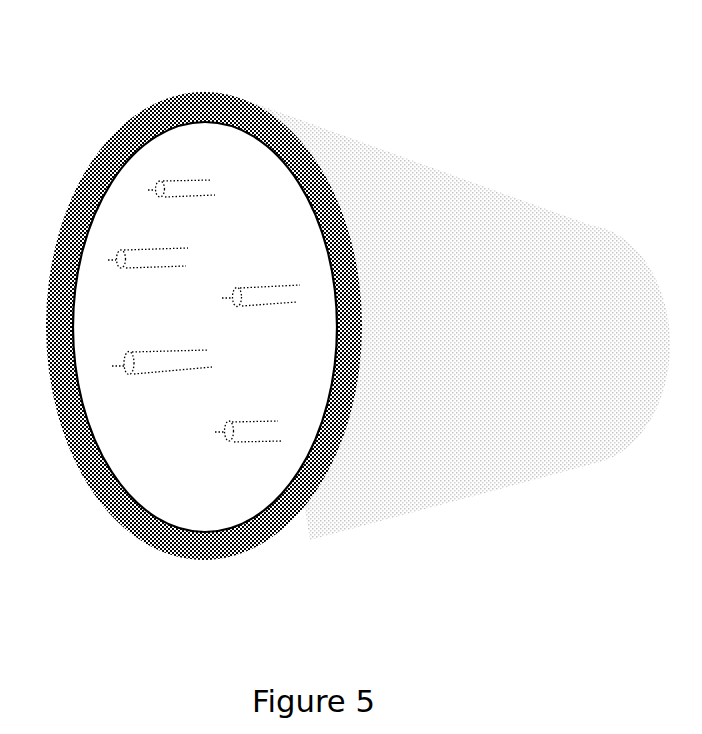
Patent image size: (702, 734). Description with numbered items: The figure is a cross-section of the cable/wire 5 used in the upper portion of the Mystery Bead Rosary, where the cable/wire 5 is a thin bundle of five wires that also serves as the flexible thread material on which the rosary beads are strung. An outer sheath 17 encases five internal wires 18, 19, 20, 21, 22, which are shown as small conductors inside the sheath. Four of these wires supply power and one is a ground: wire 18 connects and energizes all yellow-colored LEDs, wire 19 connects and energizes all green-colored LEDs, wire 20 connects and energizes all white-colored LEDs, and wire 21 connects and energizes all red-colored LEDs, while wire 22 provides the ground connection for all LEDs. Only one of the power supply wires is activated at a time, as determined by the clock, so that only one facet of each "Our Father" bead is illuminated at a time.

The cable/wire 5 is at (100, 121).
The outer sheath 17 is at (252, 92).
The wire 18 is at (178, 200).
The wire 19 is at (131, 272).
The wire 20 is at (252, 309).
The wire 21 is at (152, 378).
The wire 22 is at (239, 448).